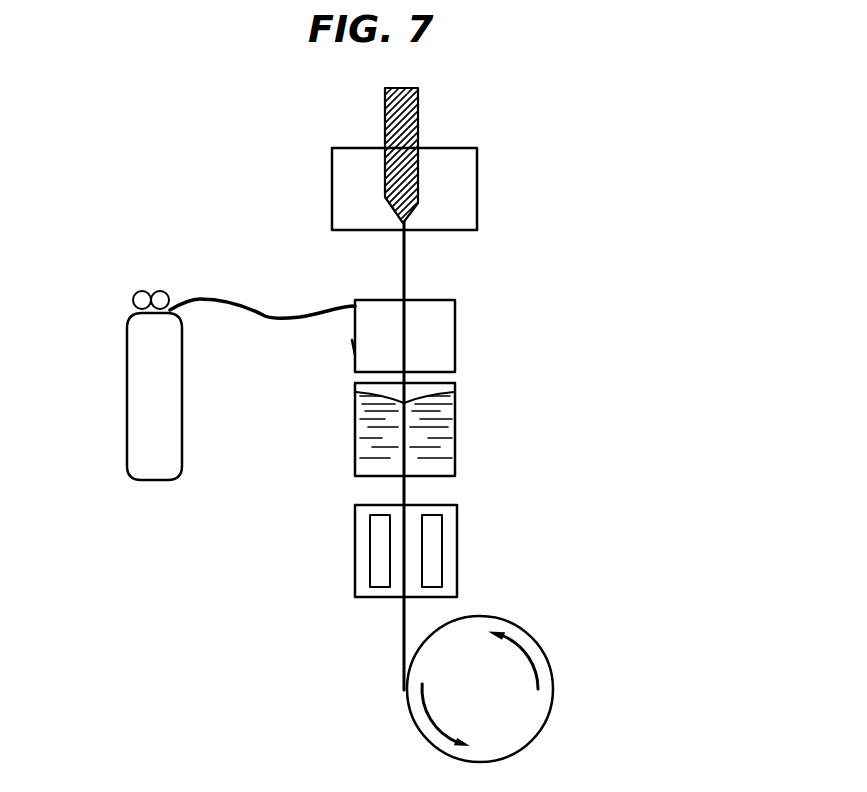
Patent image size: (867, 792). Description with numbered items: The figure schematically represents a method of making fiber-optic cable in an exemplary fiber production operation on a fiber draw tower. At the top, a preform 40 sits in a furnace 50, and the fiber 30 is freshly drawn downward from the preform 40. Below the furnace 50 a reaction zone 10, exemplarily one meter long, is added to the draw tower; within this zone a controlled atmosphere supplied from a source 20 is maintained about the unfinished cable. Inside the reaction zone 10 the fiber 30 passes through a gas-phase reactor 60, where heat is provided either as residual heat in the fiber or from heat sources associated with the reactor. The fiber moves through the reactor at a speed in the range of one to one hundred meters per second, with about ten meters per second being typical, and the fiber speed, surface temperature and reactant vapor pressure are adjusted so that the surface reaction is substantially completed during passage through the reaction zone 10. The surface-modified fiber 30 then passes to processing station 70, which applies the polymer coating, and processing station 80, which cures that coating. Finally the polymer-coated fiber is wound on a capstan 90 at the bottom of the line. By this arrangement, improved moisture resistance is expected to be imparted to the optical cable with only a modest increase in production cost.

The reaction zone 10 is at (355, 348).
The source 20 is at (125, 338).
The fiber 30 is at (406, 267).
The preform 40 is at (418, 114).
The furnace 50 is at (477, 190).
The gas-phase reactor 60 is at (455, 335).
The processing station 70 is at (455, 413).
The processing station 80 is at (457, 547).
The capstan 90 is at (517, 626).